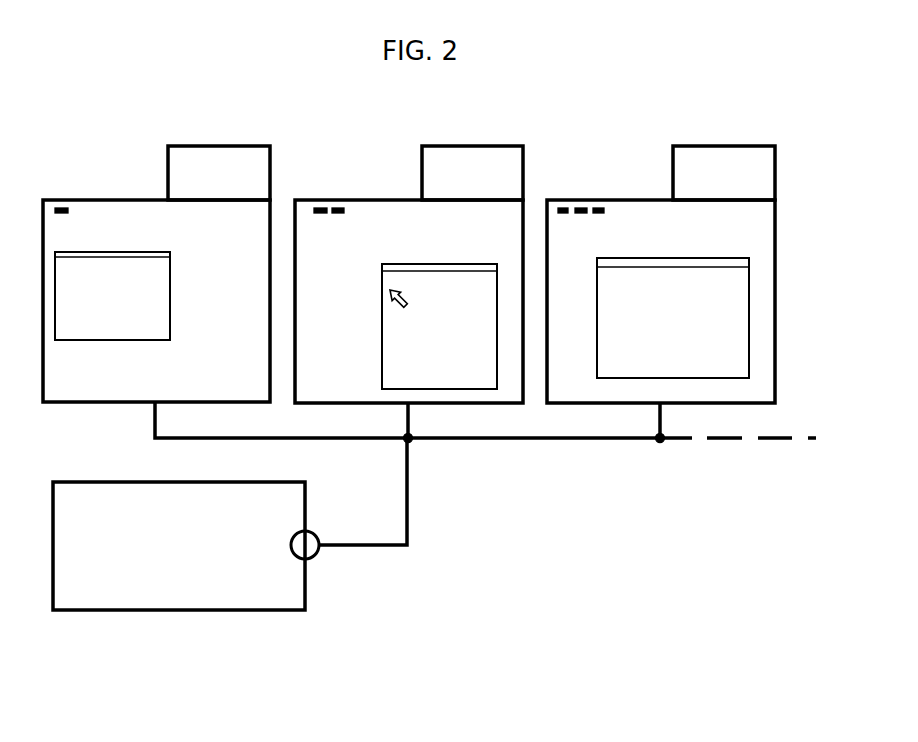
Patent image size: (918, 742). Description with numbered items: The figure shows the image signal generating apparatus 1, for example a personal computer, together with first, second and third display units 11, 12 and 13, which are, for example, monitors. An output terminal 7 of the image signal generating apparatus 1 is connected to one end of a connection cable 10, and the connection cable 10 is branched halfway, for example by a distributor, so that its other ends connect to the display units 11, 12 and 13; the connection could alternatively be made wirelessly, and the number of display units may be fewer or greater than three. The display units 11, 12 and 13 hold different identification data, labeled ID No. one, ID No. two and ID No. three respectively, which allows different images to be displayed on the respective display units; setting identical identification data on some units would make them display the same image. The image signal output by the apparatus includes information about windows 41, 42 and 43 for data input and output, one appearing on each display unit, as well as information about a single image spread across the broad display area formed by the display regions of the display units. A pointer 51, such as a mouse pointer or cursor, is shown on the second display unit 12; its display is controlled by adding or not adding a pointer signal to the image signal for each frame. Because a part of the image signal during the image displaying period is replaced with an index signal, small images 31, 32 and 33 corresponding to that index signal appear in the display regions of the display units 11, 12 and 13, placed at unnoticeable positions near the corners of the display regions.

The image signal generating apparatus 1 is at (190, 611).
The output terminal 7 is at (312, 531).
The connection cable 10 is at (385, 548).
The first display unit 11 is at (122, 200).
The second display unit 12 is at (365, 200).
The third display unit 13 is at (617, 200).
The image corresponding to the index signal 31 is at (62, 200).
The image corresponding to the index signal 32 is at (327, 200).
The image corresponding to the index signal 33 is at (595, 200).
The window 41 is at (143, 253).
The window 42 is at (433, 265).
The window 43 is at (673, 258).
The pointer 51 is at (403, 305).